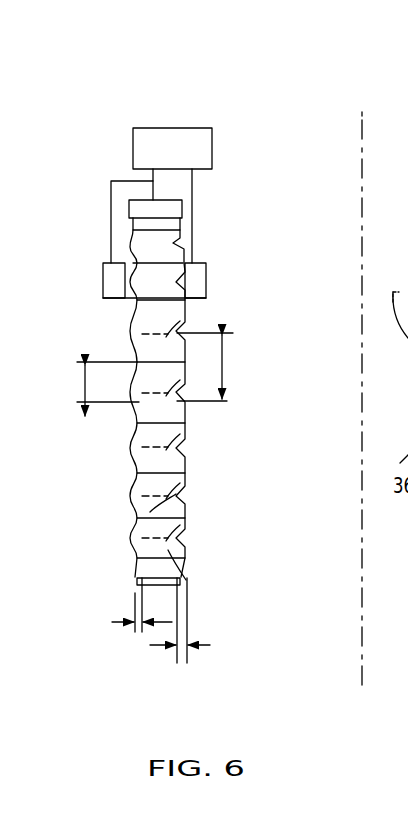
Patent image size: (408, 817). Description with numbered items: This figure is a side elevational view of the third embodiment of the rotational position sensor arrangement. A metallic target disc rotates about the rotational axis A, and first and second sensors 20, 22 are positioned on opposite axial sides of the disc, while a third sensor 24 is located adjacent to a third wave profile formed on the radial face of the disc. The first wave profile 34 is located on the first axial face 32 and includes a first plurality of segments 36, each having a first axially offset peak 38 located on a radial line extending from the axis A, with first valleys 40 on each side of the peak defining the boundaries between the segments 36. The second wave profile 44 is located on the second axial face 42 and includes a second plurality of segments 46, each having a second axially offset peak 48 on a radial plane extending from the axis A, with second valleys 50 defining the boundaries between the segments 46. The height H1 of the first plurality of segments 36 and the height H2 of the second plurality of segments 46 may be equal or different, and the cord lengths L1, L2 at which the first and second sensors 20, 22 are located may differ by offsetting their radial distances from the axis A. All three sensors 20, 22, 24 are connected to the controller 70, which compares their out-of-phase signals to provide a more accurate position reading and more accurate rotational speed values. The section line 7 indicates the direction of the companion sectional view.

The section line 7 is at (362, 103).
The controller 70 is at (150, 135).
The first sensor 20 is at (118, 363).
The second sensor 22 is at (110, 283).
The third sensor 24 is at (163, 206).
The first axial face 32 is at (205, 498).
The first wave profile 34 is at (188, 530).
The first plurality of segments 36 is at (184, 447).
The first axially offset peak 38 is at (184, 462).
The first valleys 40 is at (184, 400).
The second axial face 42 is at (86, 506).
The second wave profile 44 is at (137, 556).
The second plurality of segments 46 is at (131, 323).
The second axially offset peak 48 is at (130, 338).
The second valleys 50 is at (104, 296).
The cord length L1 is at (226, 336).
The cord length L2 is at (84, 391).
The height of first plurality of segments H1 is at (210, 645).
The height of second plurality of segments H2 is at (124, 606).
The rotational axis A is at (184, 423).